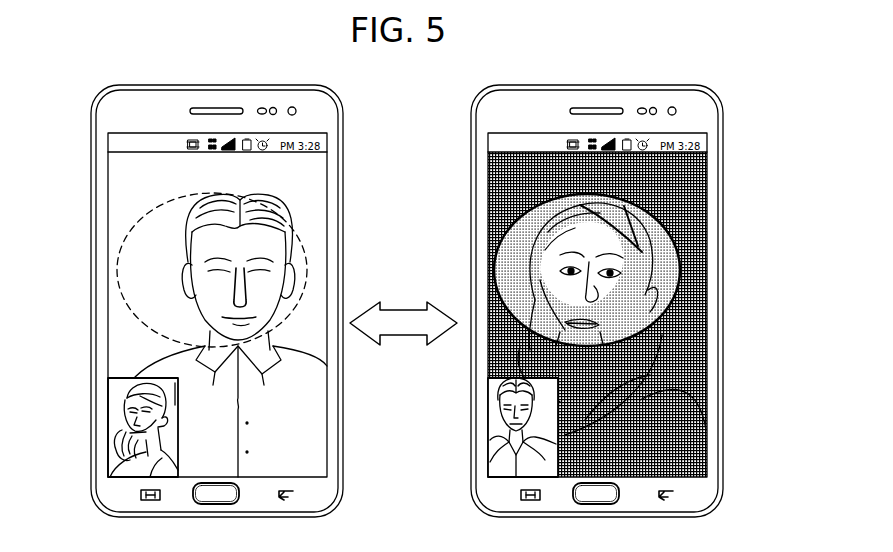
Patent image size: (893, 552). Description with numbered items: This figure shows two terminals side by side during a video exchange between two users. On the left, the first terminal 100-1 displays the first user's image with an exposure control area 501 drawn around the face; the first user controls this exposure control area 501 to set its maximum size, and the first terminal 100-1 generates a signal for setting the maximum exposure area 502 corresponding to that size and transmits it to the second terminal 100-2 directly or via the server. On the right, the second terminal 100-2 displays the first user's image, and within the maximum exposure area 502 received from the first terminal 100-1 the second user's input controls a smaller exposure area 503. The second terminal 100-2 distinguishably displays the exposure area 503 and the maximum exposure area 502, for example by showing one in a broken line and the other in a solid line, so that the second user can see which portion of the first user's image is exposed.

The first terminal 100-1 is at (273, 92).
The second terminal 100-2 is at (653, 92).
The exposure control area 501 is at (127, 302).
The maximum exposure area 502 is at (702, 240).
The exposure area 503 is at (682, 268).